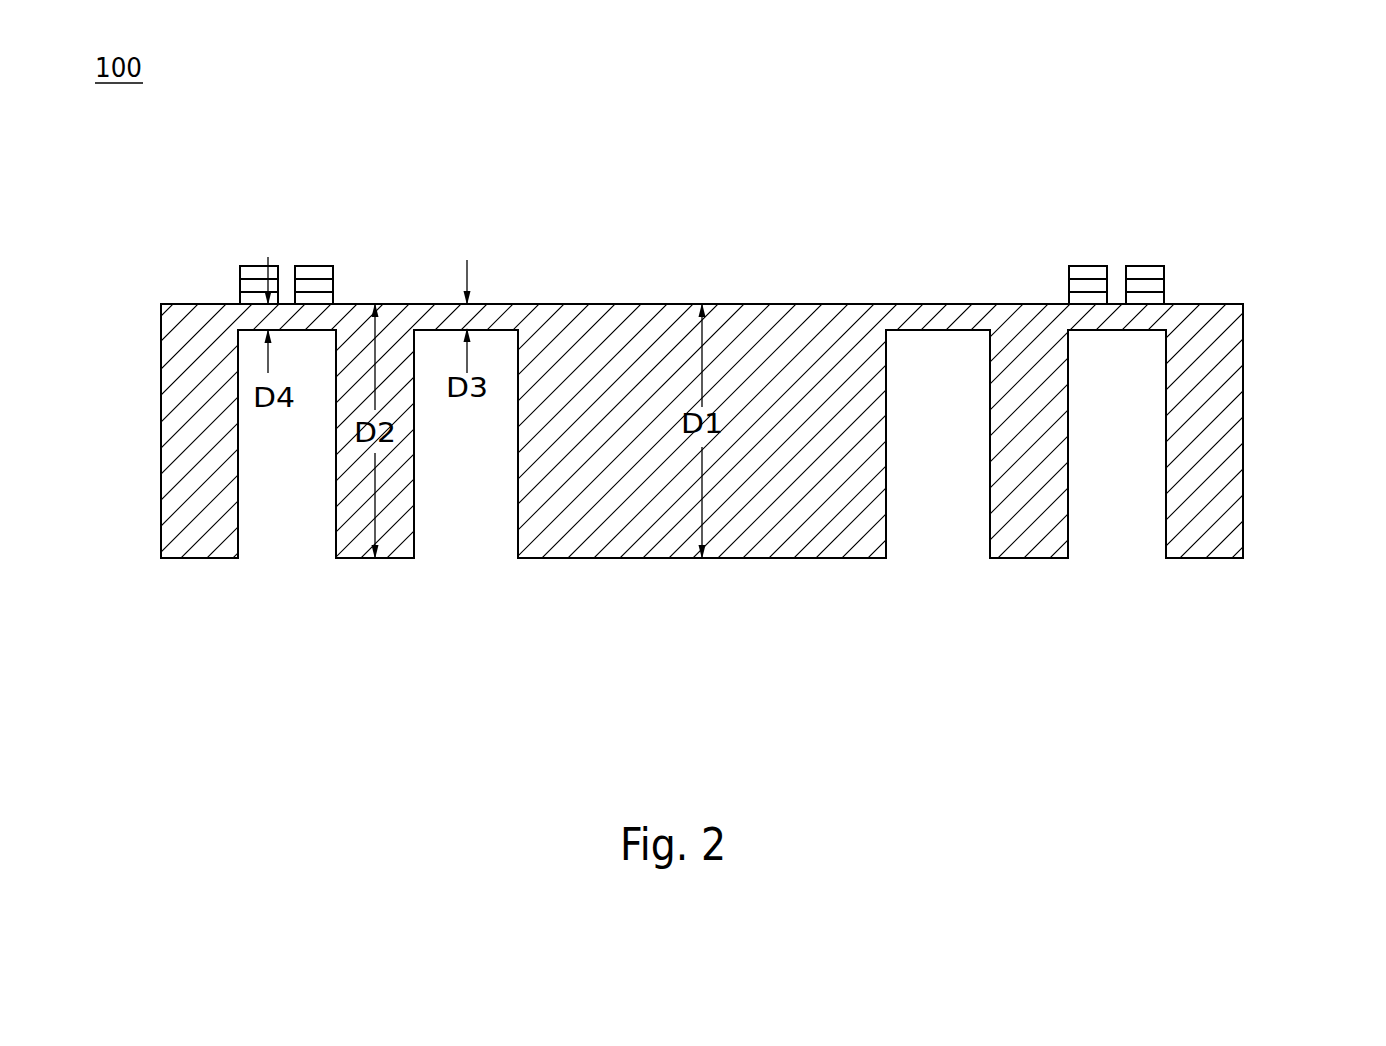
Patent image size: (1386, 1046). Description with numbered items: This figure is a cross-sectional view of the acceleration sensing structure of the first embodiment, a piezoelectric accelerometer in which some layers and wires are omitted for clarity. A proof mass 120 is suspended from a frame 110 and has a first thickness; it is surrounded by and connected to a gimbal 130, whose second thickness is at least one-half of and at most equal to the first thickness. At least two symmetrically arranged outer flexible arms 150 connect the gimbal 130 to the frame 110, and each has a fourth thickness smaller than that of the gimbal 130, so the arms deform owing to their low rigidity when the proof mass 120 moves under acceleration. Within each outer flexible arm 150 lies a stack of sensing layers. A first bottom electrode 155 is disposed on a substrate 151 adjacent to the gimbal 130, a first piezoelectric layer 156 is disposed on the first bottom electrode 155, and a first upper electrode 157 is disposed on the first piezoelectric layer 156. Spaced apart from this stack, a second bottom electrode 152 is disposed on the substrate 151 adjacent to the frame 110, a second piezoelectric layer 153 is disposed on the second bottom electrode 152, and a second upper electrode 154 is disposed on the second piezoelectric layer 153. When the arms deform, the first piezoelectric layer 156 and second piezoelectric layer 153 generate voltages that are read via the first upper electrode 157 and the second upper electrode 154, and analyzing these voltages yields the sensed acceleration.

The frame 110 is at (193, 365).
The proof mass 120 is at (738, 330).
The gimbal 130 is at (352, 528).
The outer flexible arms 150 is at (398, 193).
The substrate 151 is at (287, 322).
The second bottom electrode 152 is at (240, 296).
The second piezoelectric layer 153 is at (240, 283).
The second upper electrode 154 is at (240, 268).
The first bottom electrode 155 is at (333, 296).
The first piezoelectric layer 156 is at (333, 283).
The first upper electrode 157 is at (333, 268).